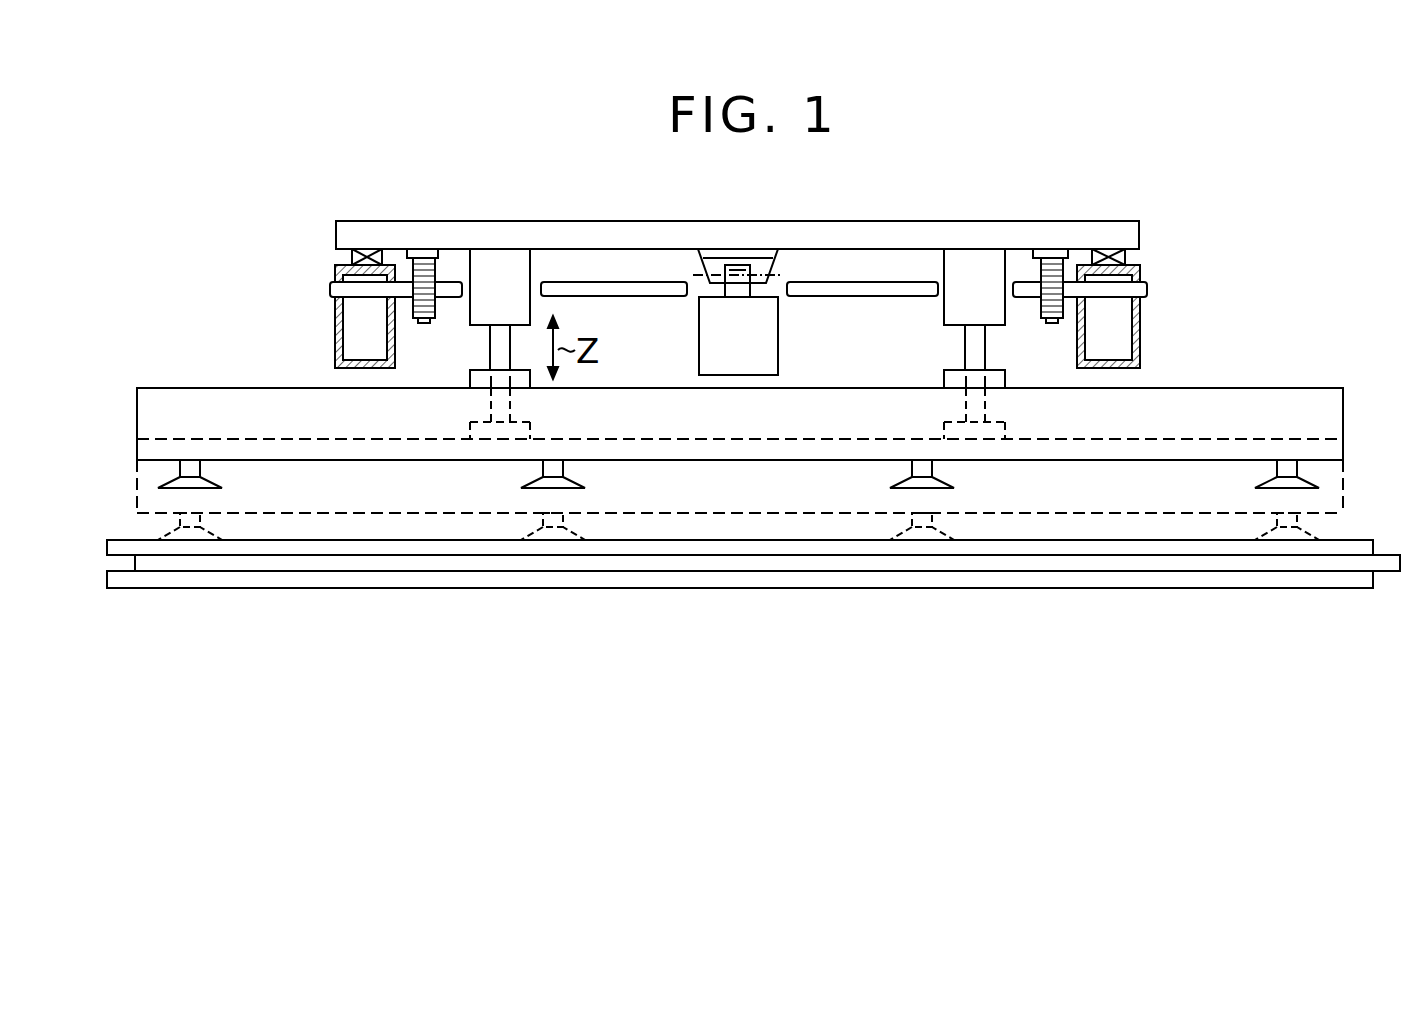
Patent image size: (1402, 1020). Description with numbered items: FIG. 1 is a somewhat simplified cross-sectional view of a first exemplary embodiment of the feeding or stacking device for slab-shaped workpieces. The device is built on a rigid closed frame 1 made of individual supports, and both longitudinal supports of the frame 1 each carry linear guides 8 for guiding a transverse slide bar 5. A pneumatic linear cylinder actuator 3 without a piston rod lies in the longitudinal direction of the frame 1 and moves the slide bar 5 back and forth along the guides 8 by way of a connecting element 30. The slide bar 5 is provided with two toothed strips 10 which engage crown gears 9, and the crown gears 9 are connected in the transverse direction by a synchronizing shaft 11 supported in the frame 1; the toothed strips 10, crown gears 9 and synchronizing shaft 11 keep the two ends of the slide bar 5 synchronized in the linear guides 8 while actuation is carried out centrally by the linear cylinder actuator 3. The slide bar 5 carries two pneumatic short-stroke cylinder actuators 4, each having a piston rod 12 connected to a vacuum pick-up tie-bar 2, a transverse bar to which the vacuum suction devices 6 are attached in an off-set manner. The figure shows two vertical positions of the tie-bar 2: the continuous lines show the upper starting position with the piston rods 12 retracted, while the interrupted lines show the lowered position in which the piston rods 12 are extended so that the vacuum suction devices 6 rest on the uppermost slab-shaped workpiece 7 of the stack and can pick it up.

The frame 1 is at (336, 332).
The vacuum pick-up tie-bar 2 is at (1240, 362).
The pneumatic linear cylinder actuator 3 is at (762, 350).
The pneumatic short-stroke cylinder actuator 4 is at (505, 270).
The transverse slide bar 5 is at (686, 236).
The vacuum suction device 6 is at (180, 484).
The slab-shaped workpiece 7 is at (1134, 545).
The linear guide 8 is at (352, 258).
The crown gear 9 is at (428, 262).
The toothed strip 10 is at (426, 324).
The synchronizing shaft 11 is at (334, 290).
The piston rod 12 is at (496, 345).
The connecting element 30 is at (762, 268).